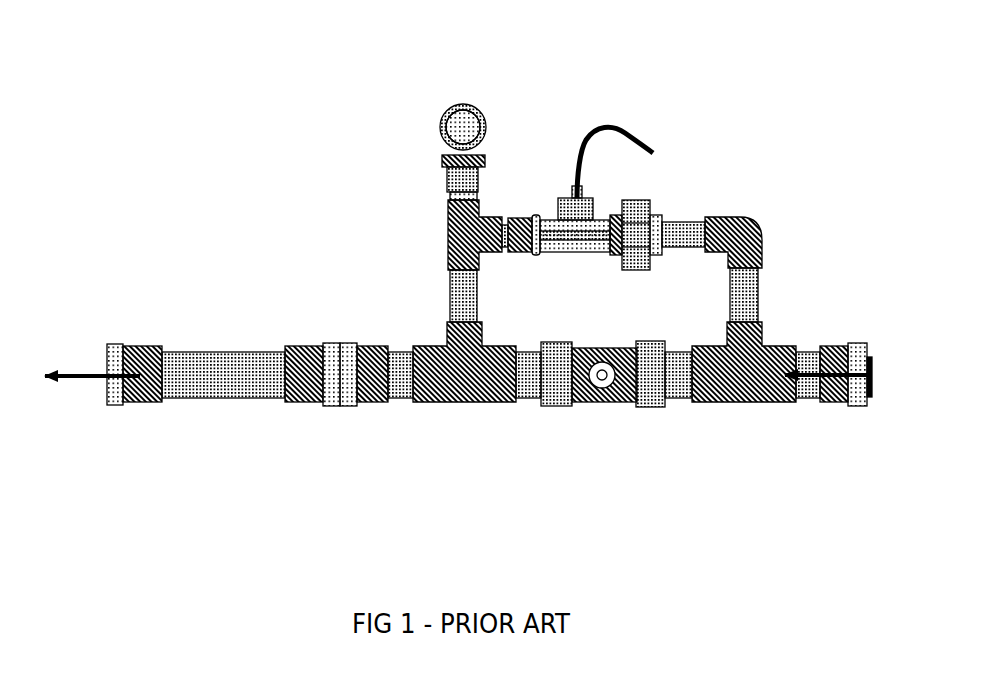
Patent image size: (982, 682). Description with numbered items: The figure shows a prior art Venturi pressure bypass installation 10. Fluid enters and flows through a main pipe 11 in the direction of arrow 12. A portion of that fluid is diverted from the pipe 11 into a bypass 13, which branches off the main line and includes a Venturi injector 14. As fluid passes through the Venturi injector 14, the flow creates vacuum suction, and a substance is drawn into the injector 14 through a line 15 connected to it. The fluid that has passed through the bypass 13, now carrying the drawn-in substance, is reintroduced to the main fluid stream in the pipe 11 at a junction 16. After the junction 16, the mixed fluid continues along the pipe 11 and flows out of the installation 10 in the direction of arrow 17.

The Venturi pressure bypass installation 10 is at (310, 243).
The pipe 11 is at (681, 373).
The arrow 12 is at (804, 385).
The bypass 13 is at (753, 245).
The Venturi injector 14 is at (583, 235).
The line 15 is at (583, 140).
The junction 16 is at (453, 392).
The arrow 17 is at (73, 383).